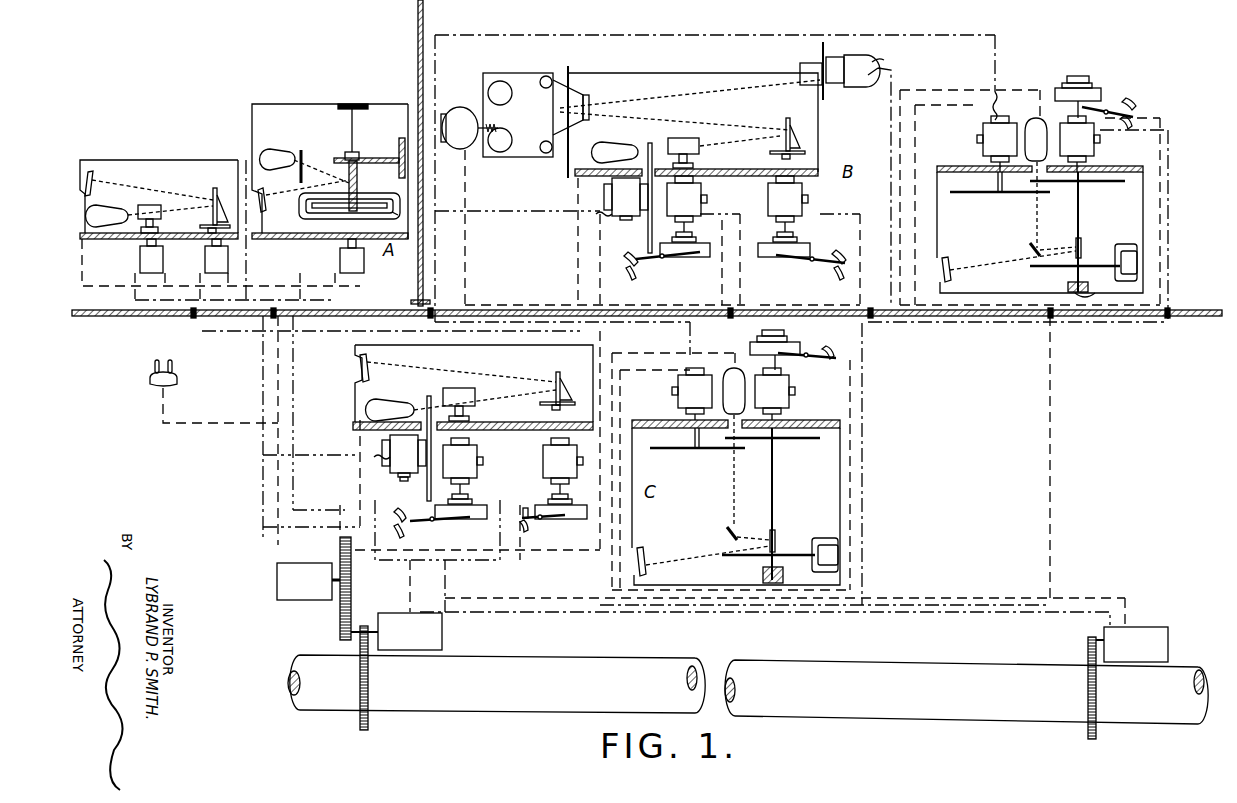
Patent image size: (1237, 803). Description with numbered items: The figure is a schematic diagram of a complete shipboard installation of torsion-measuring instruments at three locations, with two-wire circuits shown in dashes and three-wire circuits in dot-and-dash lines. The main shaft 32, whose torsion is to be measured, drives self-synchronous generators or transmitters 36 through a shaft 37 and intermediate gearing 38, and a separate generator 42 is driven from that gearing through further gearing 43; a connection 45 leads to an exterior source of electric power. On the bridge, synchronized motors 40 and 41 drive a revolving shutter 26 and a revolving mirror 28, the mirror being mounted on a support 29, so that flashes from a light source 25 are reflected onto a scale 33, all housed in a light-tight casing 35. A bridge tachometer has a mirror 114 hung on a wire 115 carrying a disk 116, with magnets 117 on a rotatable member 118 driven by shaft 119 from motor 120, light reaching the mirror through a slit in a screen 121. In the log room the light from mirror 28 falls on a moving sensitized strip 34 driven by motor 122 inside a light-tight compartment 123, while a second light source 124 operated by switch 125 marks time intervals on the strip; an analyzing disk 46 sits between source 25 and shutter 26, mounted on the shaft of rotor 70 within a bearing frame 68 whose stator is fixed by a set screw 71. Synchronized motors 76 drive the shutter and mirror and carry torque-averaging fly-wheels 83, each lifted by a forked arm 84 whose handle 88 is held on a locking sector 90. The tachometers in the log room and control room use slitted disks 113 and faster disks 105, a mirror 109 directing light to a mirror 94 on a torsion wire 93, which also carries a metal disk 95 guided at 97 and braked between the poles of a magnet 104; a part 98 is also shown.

The source of light 25 is at (96, 207).
The revolving shutter 26 is at (161, 215).
The revolving mirror 28 is at (212, 192).
The support 29 is at (735, 169).
The main shaft 32 is at (860, 705).
The scale 33 is at (92, 172).
The moving strip of sensitized film 34 is at (548, 112).
The light-tight casing 35 is at (150, 160).
The generators or transmitters 36 is at (442, 632).
The shaft 37 is at (370, 630).
The intermediate gearing 38 is at (360, 640).
The synchronized motor or receiver 40 is at (140, 262).
The synchronized motor or receiver 41 is at (205, 262).
The separate generator or transmitter 42 is at (277, 580).
The intermediate gearing 43 is at (351, 570).
The connection to exterior source of electric power 45 is at (174, 373).
The disk 46 is at (648, 236).
The bearing frame 68 is at (515, 327).
The rotor 70 is at (604, 192).
The set screw 71 is at (398, 479).
The synchronized motor 76 is at (701, 192).
The fly-wheel 83 is at (700, 257).
The forked arm 84 is at (668, 259).
The handle 88 is at (1140, 122).
The locking sector 90 is at (628, 270).
The torsion wire 93 is at (1079, 222).
The mirror 94 is at (1081, 244).
The metal disk 95 is at (1050, 268).
The guide 97 is at (1068, 288).
The spring 98 is at (1093, 288).
The magnet 104 is at (1124, 244).
The disk 105 is at (1100, 183).
The mirror 109 is at (1030, 248).
The disk 113 is at (965, 193).
The mirror 114 is at (349, 178).
The wire 115 is at (353, 123).
The disk 116 is at (340, 203).
The magnets 117 is at (300, 200).
The rotatable member 118 is at (399, 220).
The shaft 119 is at (348, 244).
The motor 120 is at (340, 262).
The screen 121 is at (303, 158).
The motor 122 is at (469, 128).
The light-tight compartment 123 is at (510, 160).
The source of light 124 is at (832, 88).
The switch 125 is at (882, 58).